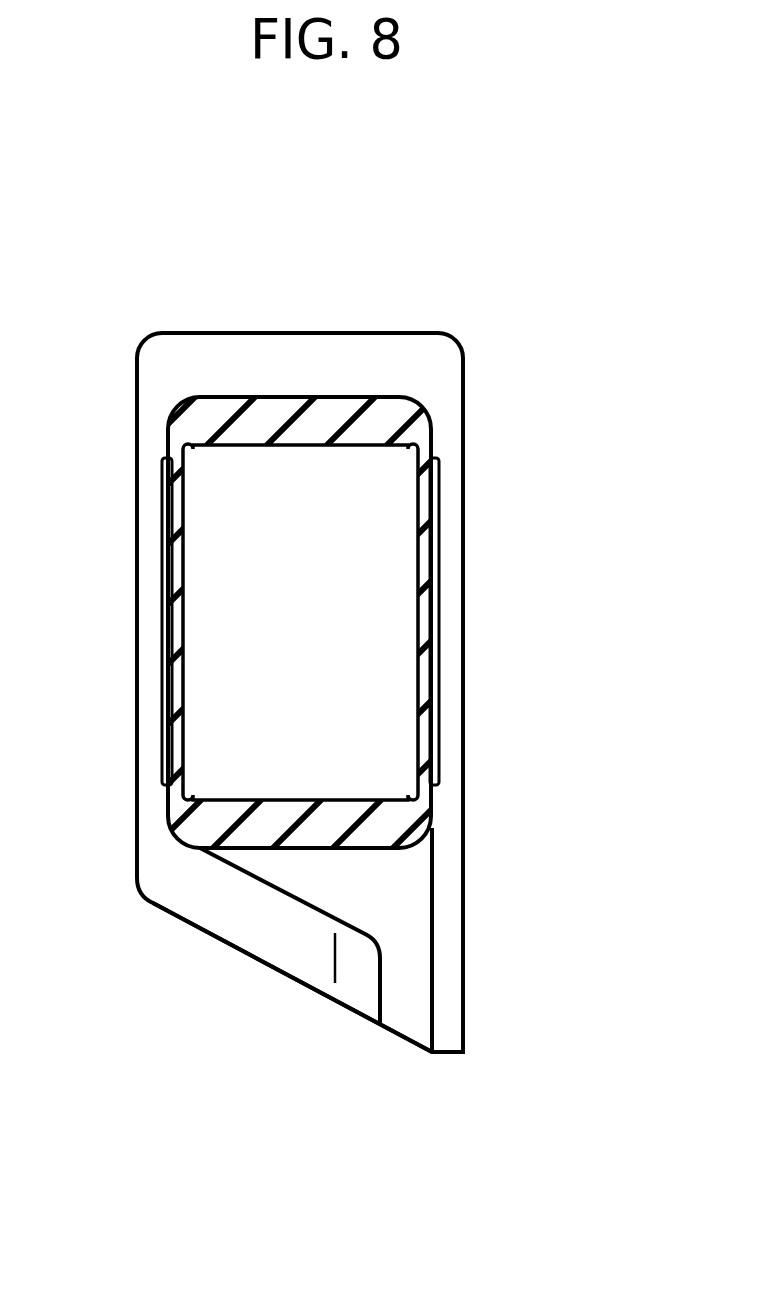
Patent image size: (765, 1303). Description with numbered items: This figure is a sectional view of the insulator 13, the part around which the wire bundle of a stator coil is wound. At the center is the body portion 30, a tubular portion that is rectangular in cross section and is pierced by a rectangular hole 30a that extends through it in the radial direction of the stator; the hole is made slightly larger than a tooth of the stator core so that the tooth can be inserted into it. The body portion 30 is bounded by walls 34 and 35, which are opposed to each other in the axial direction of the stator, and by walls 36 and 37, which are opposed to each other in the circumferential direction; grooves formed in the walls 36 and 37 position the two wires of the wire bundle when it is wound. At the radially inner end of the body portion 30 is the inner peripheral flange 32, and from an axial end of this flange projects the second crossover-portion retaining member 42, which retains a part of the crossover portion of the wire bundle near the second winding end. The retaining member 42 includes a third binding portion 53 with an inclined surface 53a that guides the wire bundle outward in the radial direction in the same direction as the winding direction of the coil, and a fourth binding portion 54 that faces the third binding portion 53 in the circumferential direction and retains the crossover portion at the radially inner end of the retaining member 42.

The insulator 13 is at (470, 277).
The body portion 30 is at (445, 404).
The rectangular hole 30a is at (353, 524).
The inner peripheral flange 32 is at (233, 917).
The wall 34 is at (295, 822).
The wall 35 is at (305, 395).
The wall 36 is at (423, 606).
The wall 37 is at (170, 592).
The second crossover-portion retaining member 42 is at (478, 1008).
The third binding portion 53 is at (312, 952).
The inclined surface 53a is at (358, 977).
The fourth binding portion 54 is at (450, 1038).